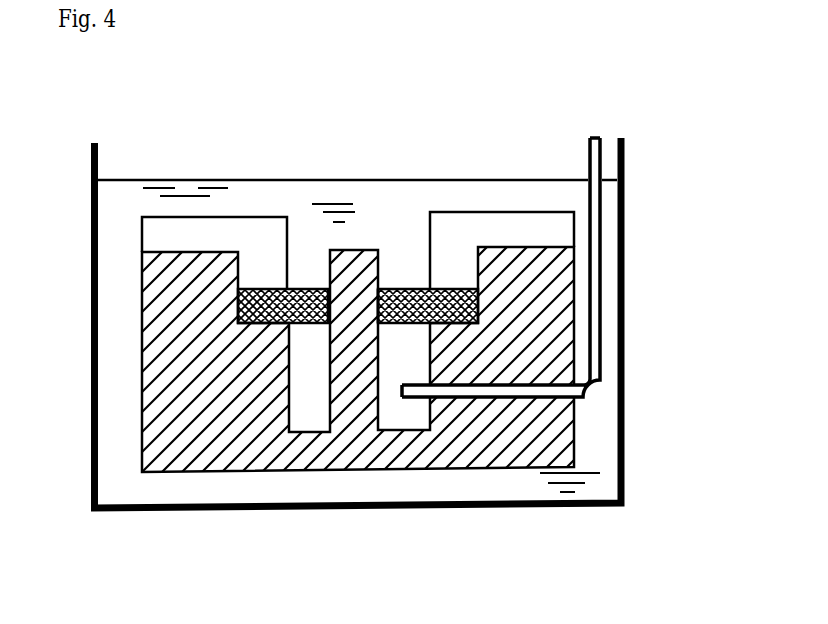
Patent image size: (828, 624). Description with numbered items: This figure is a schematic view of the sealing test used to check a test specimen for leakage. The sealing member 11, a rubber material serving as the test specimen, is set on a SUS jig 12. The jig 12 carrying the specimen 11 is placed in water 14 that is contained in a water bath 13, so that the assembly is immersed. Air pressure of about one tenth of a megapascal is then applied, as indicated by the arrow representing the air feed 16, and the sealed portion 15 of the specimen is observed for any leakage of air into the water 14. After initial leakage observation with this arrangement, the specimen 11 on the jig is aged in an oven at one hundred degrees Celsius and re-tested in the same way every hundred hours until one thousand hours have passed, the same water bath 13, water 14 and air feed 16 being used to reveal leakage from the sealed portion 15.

The sealing member 11 is at (480, 302).
The SUS jig 12 is at (532, 318).
The water bath 13 is at (625, 388).
The water 14 is at (600, 452).
The sealed portion 15 is at (390, 286).
The air feed 16 is at (593, 134).